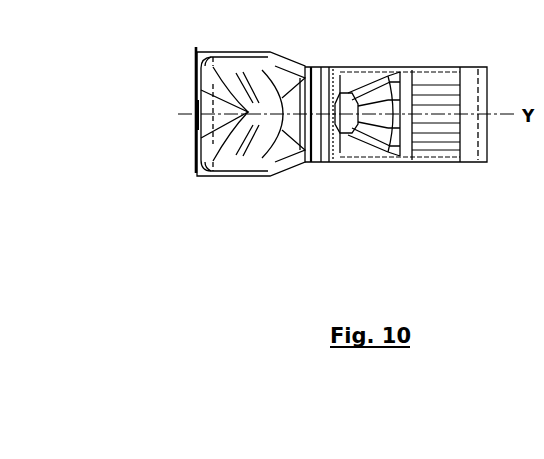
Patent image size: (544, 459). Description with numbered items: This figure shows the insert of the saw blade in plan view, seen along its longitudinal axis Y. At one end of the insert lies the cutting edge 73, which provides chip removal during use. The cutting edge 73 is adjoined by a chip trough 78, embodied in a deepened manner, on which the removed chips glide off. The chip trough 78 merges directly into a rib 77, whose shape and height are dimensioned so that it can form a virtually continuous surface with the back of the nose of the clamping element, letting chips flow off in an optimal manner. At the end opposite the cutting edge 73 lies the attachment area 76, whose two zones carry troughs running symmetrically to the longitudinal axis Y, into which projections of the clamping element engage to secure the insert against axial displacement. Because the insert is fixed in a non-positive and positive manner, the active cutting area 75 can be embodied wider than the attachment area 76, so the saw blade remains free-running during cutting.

The cutting edge 73 is at (196, 105).
The active cutting area 75 is at (237, 181).
The attachment area 76 is at (455, 170).
The rib 77 is at (324, 152).
The chip trough 78 is at (195, 135).